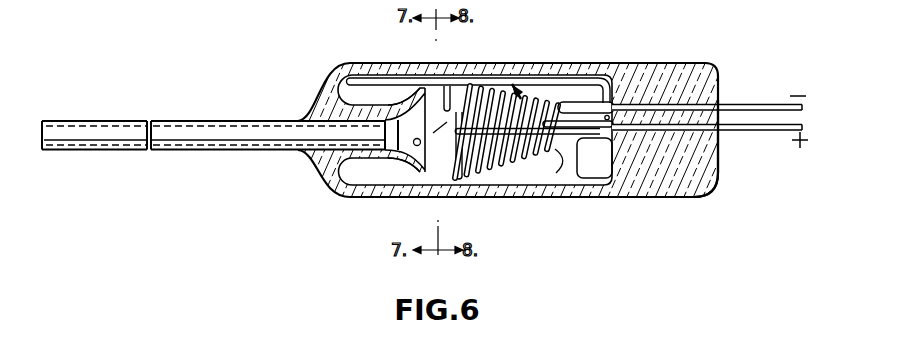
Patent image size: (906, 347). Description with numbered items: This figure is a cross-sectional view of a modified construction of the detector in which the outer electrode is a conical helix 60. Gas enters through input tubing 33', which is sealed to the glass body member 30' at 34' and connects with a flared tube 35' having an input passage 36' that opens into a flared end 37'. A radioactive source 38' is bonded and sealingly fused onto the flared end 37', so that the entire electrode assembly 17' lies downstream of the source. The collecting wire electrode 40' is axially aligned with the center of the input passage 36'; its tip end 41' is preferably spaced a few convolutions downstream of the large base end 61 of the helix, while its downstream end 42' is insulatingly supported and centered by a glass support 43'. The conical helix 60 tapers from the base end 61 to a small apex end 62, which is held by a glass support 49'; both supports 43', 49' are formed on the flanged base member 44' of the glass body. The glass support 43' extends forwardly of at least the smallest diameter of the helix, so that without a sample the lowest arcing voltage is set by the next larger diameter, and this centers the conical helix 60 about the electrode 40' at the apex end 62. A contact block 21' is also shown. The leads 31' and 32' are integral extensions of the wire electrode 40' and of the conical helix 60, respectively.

The electrode assembly 17' is at (530, 52).
The contact block 21' is at (588, 158).
The body member 30' is at (509, 118).
The lead 31' is at (709, 89).
The lead 32' is at (710, 146).
The input tubing 33' is at (149, 160).
The seal 34' is at (274, 160).
The flared tube 35' is at (467, 70).
The input passage 36' is at (399, 71).
The flared end 37' is at (426, 104).
The radioactive source 38' is at (399, 191).
The collecting wire electrode 40' is at (506, 155).
The tip end 41' is at (475, 107).
The downstream end 42' is at (574, 170).
The glass support 43' is at (586, 163).
The flanged base member 44' is at (659, 162).
The glass support 49' is at (619, 69).
The conical helix 60 is at (522, 95).
The base end 61 is at (440, 186).
The apex end 62 is at (549, 165).